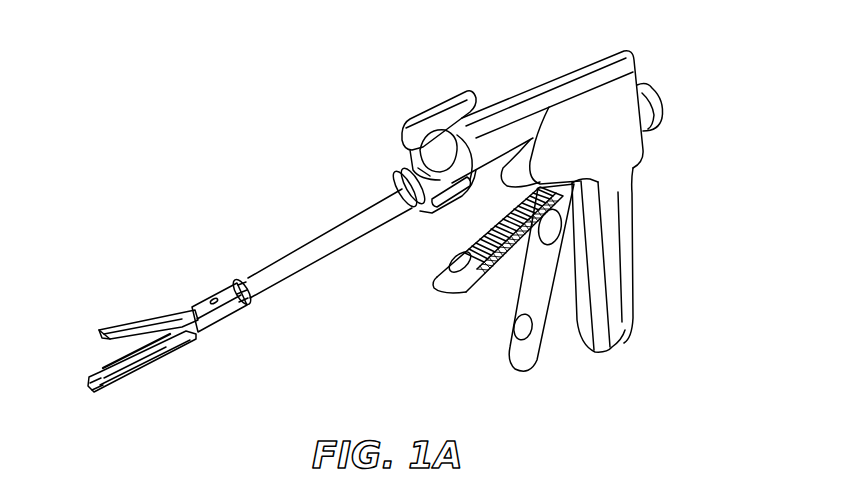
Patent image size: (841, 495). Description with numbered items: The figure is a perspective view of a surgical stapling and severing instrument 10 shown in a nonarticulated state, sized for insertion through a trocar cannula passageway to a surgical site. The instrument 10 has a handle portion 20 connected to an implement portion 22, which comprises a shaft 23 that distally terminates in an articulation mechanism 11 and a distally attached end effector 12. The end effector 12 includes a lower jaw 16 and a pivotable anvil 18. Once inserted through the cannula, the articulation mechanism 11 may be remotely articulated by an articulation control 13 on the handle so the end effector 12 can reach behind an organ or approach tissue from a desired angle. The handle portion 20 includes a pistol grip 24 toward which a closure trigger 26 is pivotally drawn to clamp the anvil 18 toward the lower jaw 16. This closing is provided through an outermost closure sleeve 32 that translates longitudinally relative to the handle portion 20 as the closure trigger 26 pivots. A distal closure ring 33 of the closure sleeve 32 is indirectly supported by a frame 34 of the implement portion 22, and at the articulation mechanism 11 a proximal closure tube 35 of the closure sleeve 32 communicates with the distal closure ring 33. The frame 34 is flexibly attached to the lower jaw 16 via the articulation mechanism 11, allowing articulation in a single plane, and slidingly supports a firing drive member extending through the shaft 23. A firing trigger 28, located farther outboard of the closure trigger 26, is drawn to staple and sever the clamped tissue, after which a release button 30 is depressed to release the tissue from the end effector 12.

The surgical stapling and severing instrument 10 is at (157, 130).
The articulation mechanism 11 is at (231, 280).
The end effector 12 is at (141, 312).
The articulation control 13 is at (427, 102).
The lower jaw 16 is at (122, 383).
The anvil 18 is at (112, 333).
The handle portion 20 is at (527, 86).
The implement portion 22 is at (256, 180).
The shaft 23 is at (318, 228).
The pistol grip 24 is at (622, 348).
The closure trigger 26 is at (531, 374).
The firing trigger 28 is at (459, 296).
The release button 30 is at (661, 98).
The closure sleeve 32 is at (321, 272).
The distal closure ring 33 is at (212, 332).
The frame 34 is at (241, 324).
The proximal closure tube 35 is at (261, 265).